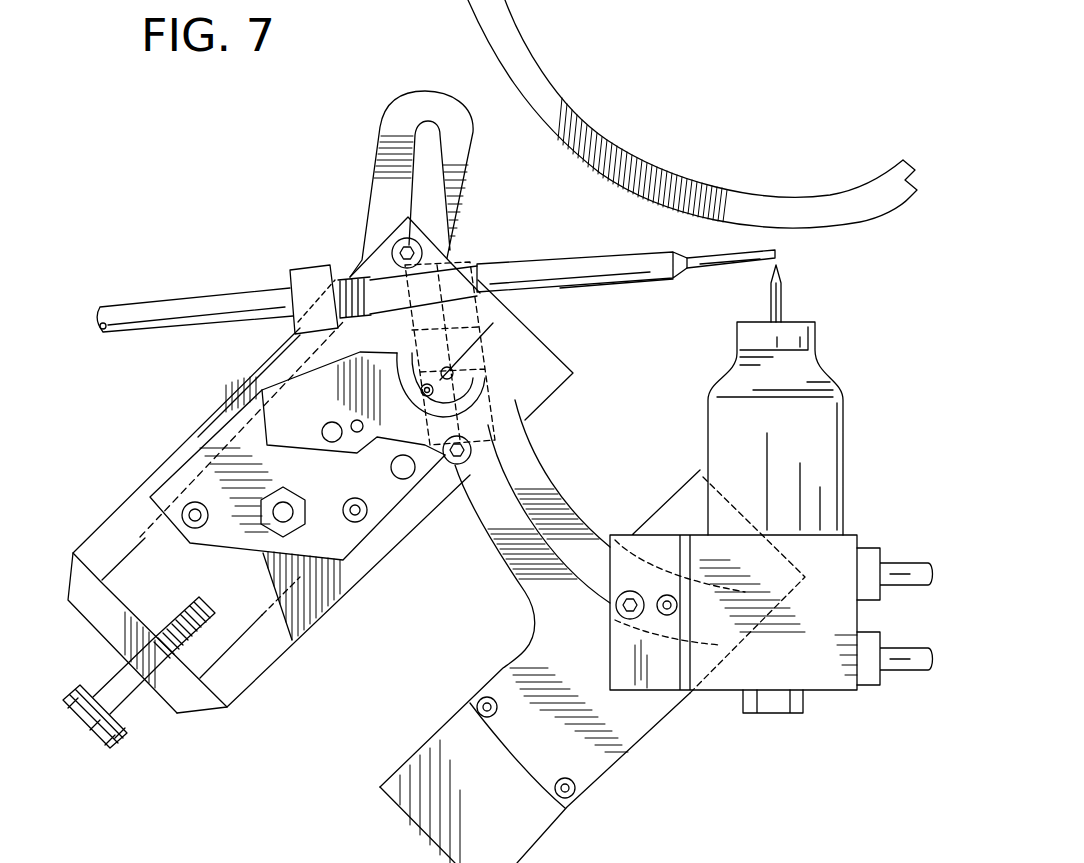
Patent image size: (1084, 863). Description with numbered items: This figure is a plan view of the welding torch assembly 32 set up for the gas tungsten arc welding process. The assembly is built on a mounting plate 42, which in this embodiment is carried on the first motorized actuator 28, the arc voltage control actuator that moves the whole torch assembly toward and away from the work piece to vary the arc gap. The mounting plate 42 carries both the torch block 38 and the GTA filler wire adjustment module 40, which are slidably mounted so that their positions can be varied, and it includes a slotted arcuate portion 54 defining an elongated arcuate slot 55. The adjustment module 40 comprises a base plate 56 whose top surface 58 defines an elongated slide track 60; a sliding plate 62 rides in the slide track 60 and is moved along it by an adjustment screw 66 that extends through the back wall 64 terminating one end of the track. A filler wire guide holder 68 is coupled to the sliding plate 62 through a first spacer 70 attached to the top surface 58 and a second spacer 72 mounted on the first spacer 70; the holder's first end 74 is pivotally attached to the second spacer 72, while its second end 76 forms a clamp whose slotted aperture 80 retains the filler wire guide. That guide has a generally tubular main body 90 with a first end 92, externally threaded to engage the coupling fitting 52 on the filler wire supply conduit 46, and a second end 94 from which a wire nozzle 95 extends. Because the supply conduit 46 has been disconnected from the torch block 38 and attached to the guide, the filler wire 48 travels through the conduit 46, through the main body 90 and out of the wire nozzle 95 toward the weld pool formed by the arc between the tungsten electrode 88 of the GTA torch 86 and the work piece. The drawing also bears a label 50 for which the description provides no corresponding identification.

The first motorized actuator 28 is at (562, 832).
The welding torch assembly 32 is at (240, 183).
The torch block 38 is at (850, 695).
The GTA filler wire adjustment module 40 is at (85, 535).
The mounting plate 42 is at (530, 617).
The filler wire supply conduit 46 is at (105, 306).
The filler wire 48 is at (710, 267).
The rod holder 50 is at (288, 288).
The coupling fitting 52 is at (300, 268).
The slotted arcuate portion 54 is at (472, 165).
The arcuate slot 55 is at (527, 537).
The base plate 56 is at (247, 690).
The top surface 58 is at (110, 538).
The slide track 60 is at (148, 603).
The sliding plate 62 is at (277, 637).
The back wall 64 is at (183, 677).
The adjustment screw 66 is at (97, 720).
The filler wire guide holder 68 is at (490, 333).
The first spacer 70 is at (210, 437).
The second spacer 72 is at (317, 385).
The first end 74 is at (480, 390).
The second end 76 is at (445, 250).
The slotted aperture 80 is at (488, 262).
The GTA torch 86 is at (845, 432).
The tungsten electrode 88 is at (782, 293).
The main body 90 is at (572, 263).
The first end 92 is at (348, 278).
The second end 94 is at (582, 288).
The wire nozzle 95 is at (610, 264).